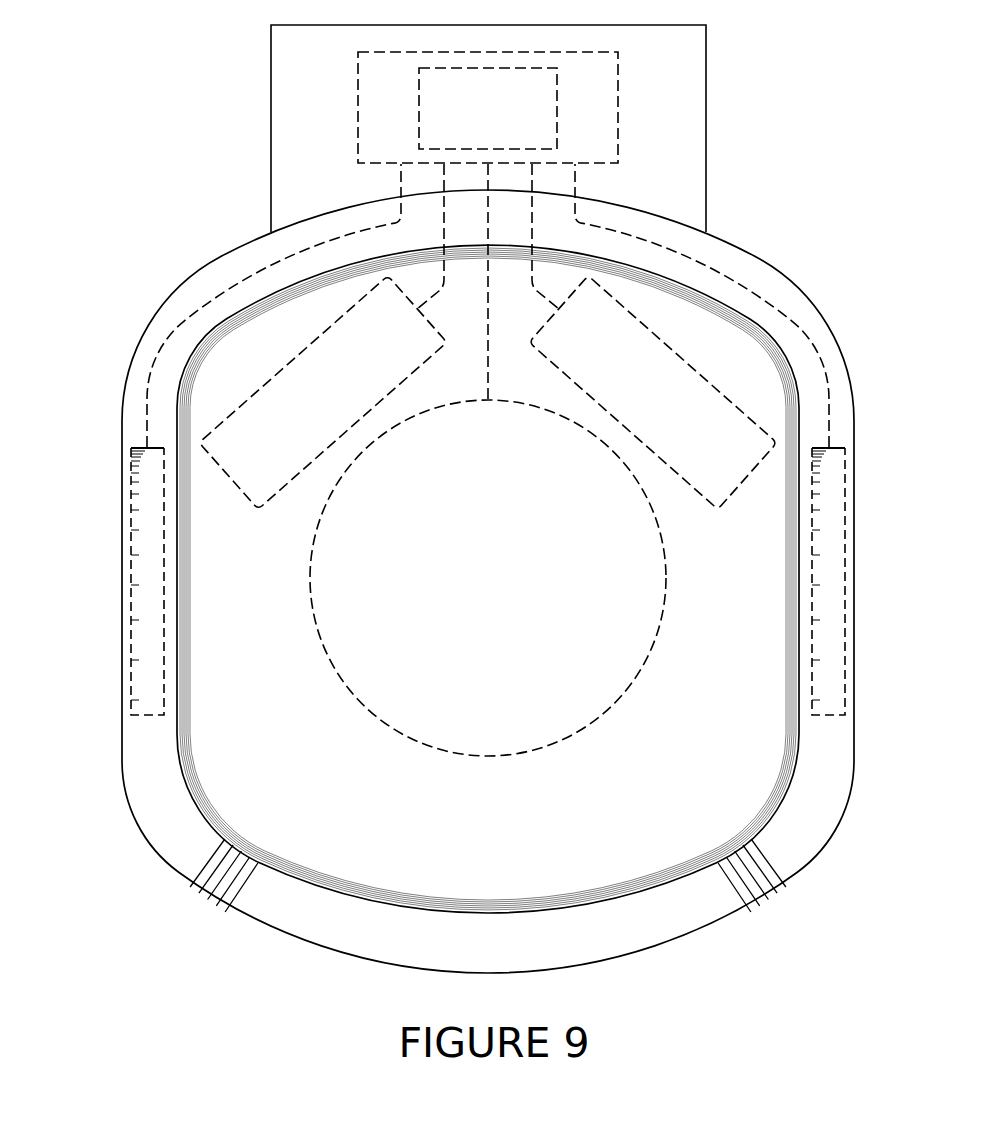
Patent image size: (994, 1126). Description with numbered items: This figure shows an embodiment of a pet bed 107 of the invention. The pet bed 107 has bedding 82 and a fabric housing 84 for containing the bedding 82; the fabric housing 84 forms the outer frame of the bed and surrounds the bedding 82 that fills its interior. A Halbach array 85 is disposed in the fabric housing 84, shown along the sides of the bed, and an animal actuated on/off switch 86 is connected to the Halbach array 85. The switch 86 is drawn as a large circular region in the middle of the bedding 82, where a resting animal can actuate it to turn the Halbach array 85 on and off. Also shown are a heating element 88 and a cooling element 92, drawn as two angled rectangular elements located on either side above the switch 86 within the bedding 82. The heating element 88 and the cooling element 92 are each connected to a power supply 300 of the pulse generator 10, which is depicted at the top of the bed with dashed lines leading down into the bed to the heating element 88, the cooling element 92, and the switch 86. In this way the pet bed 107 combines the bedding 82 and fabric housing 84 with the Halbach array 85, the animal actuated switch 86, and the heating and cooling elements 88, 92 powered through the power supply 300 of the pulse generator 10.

The pet bed 107 is at (813, 193).
The fabric housing 84 is at (822, 813).
The bedding 82 is at (237, 763).
The pulse generator 10 is at (583, 108).
The power supply 300 is at (440, 107).
The heating element 88 is at (307, 377).
The cooling element 92 is at (670, 373).
The animal actuated on/off switch 86 is at (630, 622).
The Halbach array 85 is at (832, 572).